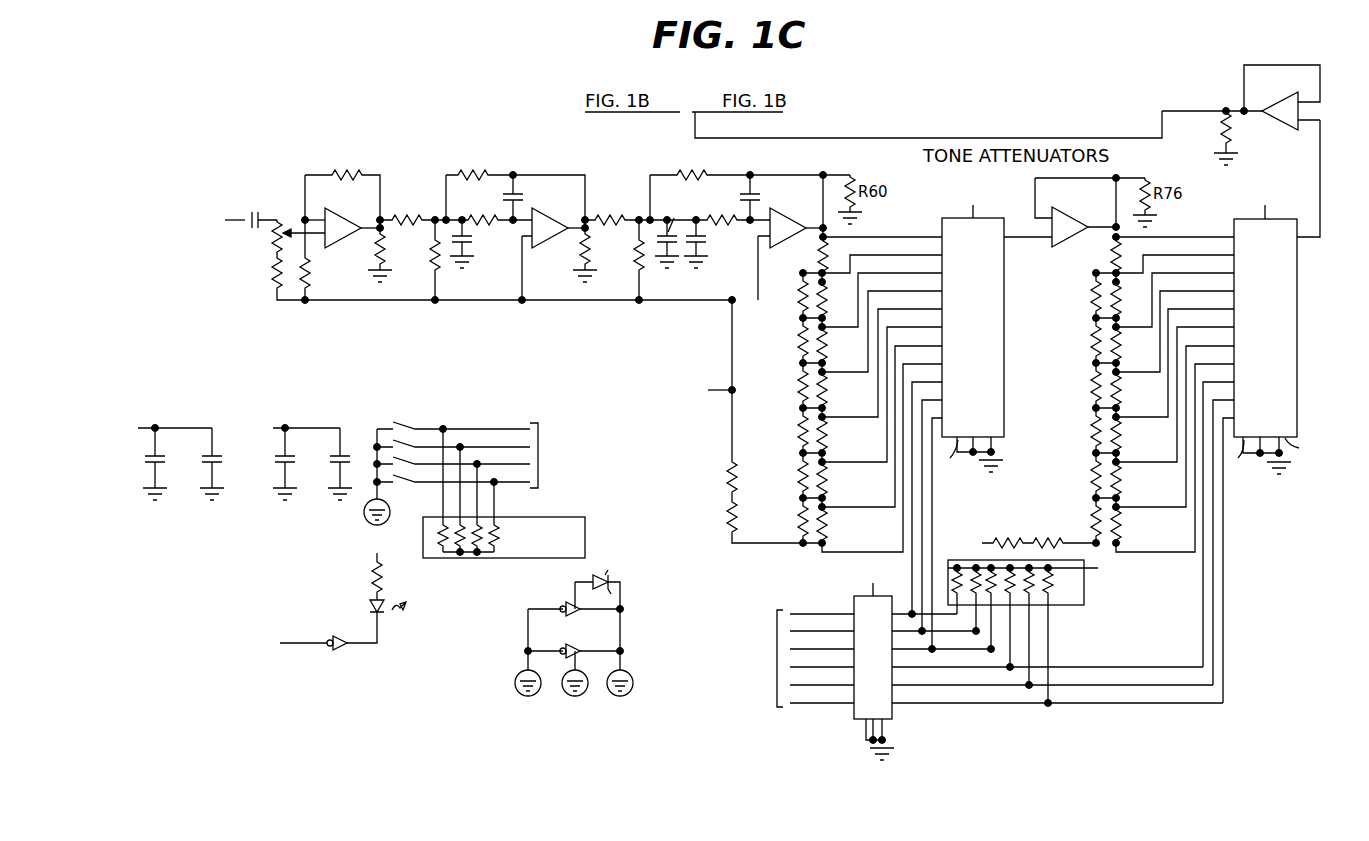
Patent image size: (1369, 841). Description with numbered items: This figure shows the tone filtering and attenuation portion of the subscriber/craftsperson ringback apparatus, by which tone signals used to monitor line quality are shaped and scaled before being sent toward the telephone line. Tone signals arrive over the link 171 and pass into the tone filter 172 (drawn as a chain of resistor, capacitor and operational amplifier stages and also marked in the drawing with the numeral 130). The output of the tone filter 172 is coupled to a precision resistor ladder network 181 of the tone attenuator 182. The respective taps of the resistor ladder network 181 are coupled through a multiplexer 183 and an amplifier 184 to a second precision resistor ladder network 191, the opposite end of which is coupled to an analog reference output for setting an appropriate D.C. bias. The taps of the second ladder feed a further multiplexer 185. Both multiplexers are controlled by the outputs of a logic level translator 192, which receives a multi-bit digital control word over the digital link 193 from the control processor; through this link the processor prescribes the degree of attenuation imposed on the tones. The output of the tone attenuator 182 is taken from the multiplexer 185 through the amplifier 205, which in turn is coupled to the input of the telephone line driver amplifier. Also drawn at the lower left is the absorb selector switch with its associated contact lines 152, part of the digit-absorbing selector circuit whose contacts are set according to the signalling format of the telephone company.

The tone filter 130 is at (563, 301).
The link 171 is at (218, 233).
The tone filter 172 is at (450, 372).
The selector switch lines 152 is at (538, 455).
The precision resistor ladder network 181 is at (826, 584).
The tone attenuator 182 is at (956, 213).
The multiplexer 183 is at (1004, 378).
The amplifier 184 is at (1133, 273).
The multiplexer 185 is at (1297, 380).
The second precision resistor ladder network 191 is at (1105, 546).
The logic level translator 192 is at (892, 710).
The link 193 is at (777, 652).
The amplifier 205 is at (1300, 112).